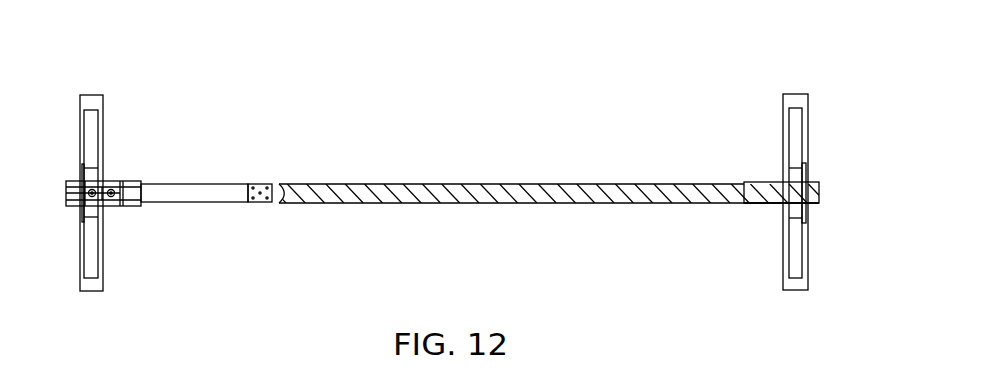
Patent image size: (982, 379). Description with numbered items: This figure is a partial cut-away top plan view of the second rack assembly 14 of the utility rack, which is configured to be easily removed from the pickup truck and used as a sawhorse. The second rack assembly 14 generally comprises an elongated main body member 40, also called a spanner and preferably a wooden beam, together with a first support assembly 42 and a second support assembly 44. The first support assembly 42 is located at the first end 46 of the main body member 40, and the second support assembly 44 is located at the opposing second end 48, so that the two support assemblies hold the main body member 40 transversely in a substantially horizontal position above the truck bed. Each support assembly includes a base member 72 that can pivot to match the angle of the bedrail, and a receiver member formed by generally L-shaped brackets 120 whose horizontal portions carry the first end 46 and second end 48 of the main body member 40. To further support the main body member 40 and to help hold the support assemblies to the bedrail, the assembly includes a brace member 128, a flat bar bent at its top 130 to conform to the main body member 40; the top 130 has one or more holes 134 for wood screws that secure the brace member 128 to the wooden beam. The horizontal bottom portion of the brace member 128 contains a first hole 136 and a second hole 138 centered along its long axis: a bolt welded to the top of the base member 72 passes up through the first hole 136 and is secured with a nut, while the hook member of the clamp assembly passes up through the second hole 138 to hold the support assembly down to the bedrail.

The second rack assembly 14 is at (455, 196).
The main body member 40 is at (442, 198).
The first support assembly 42 is at (106, 199).
The second support assembly 44 is at (826, 192).
The first end 46 is at (125, 174).
The second end 48 is at (744, 197).
The base member 72 is at (101, 288).
The L shaped bracket 120 is at (763, 205).
The brace member 128 is at (201, 190).
The top 130 is at (284, 198).
The holes 134 is at (259, 203).
The first hole 136 is at (94, 191).
The second hole 138 is at (113, 205).